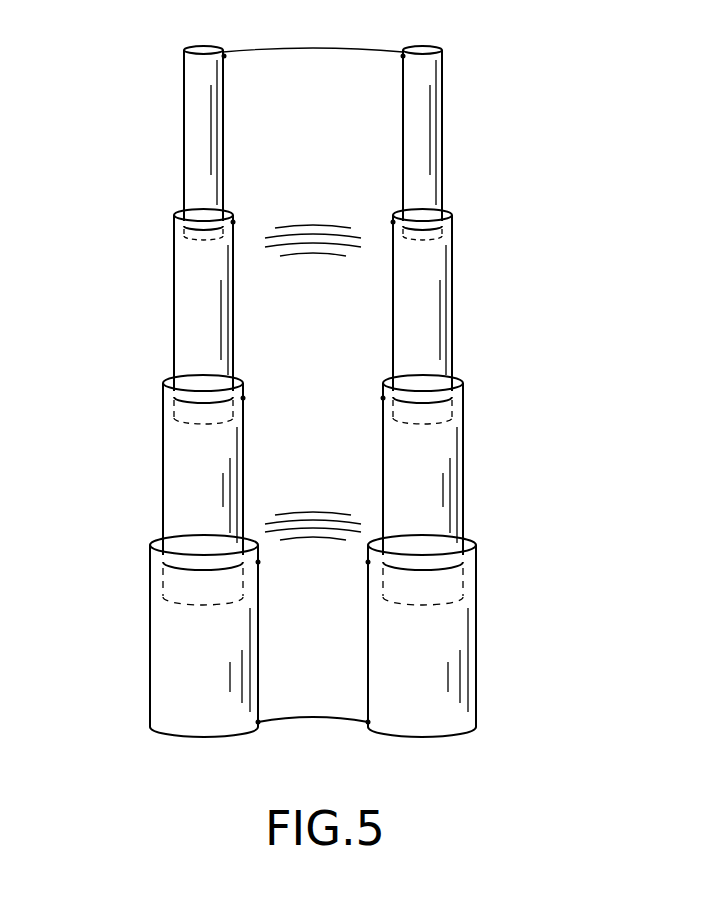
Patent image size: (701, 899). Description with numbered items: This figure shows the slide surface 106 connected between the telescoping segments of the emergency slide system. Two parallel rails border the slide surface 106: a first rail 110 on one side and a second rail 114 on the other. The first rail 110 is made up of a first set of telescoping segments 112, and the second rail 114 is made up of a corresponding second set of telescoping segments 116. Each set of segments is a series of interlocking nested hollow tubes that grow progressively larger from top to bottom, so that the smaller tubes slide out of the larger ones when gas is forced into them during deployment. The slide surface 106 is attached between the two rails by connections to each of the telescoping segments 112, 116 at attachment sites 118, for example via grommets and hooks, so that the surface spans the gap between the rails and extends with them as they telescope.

The slide surface 106 is at (330, 310).
The first rail 110 is at (163, 316).
The first set of telescoping segments 112 is at (169, 391).
The second rail 114 is at (436, 253).
The second set of telescoping segments 116 is at (460, 391).
The attachment sites 118 is at (224, 56).